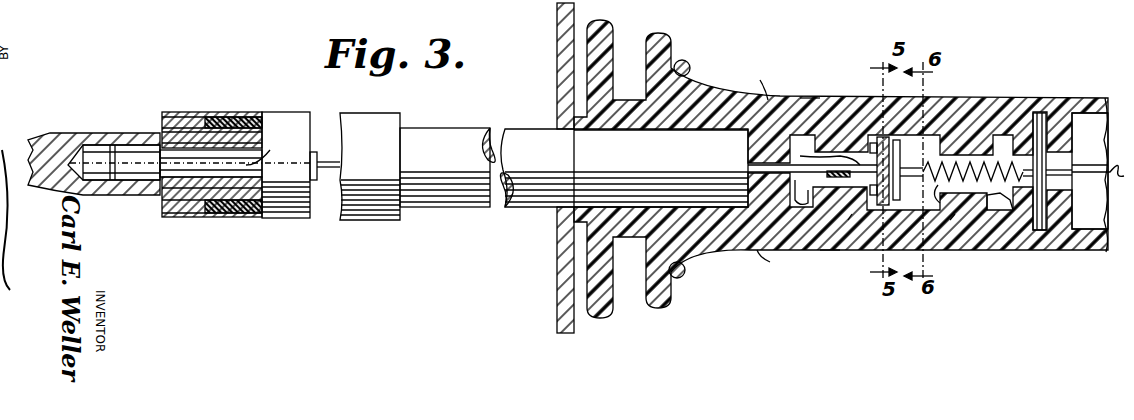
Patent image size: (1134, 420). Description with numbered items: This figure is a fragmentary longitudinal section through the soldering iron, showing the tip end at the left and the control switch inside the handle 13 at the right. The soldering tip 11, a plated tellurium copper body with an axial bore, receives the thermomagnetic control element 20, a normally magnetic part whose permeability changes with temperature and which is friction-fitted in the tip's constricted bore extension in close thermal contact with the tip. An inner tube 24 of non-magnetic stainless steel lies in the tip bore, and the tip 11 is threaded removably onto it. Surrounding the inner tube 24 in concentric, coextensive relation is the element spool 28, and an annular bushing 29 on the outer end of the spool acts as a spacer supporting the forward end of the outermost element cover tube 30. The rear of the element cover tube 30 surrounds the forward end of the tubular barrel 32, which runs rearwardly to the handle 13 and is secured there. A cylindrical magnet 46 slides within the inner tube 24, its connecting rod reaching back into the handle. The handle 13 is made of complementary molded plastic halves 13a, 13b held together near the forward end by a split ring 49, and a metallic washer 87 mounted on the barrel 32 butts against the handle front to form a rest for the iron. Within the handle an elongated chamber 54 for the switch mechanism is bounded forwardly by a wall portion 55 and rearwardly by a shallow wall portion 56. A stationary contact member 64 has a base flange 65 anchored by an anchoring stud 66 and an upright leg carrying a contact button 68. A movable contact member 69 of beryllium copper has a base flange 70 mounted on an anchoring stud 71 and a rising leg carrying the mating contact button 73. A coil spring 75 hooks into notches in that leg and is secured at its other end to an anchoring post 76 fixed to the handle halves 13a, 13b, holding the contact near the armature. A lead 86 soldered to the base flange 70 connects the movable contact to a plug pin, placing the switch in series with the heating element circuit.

The soldering tip 11 is at (48, 142).
The thermomagnetic control element 20 is at (127, 150).
The inner tube 24 is at (186, 178).
The element spool 28 is at (226, 214).
The annular bushing 29 is at (194, 214).
The element cover tube 30 is at (284, 118).
The tubular barrel 32 is at (438, 135).
The cylindrical magnet 46 is at (270, 148).
The split ring 49 is at (684, 61).
The handle 13 is at (712, 80).
The handle half 13a is at (768, 100).
The handle half 13b is at (777, 263).
The wall portion 55 is at (800, 100).
The anchoring stud 66 is at (824, 262).
The metallic washer 87 is at (557, 262).
The contact button 68 is at (812, 160).
The contact button 73 is at (894, 171).
The movable contact member 69 is at (961, 182).
The coil spring 75 is at (1000, 174).
The base flange 65 is at (801, 207).
The stationary contact member 64 is at (849, 224).
The elongated chamber 54 is at (951, 224).
The base flange 70 is at (1038, 232).
The anchoring stud 71 is at (1030, 215).
The shallow wall portion 56 is at (1060, 120).
The lead 86 is at (1090, 155).
The anchoring post 76 is at (1098, 174).